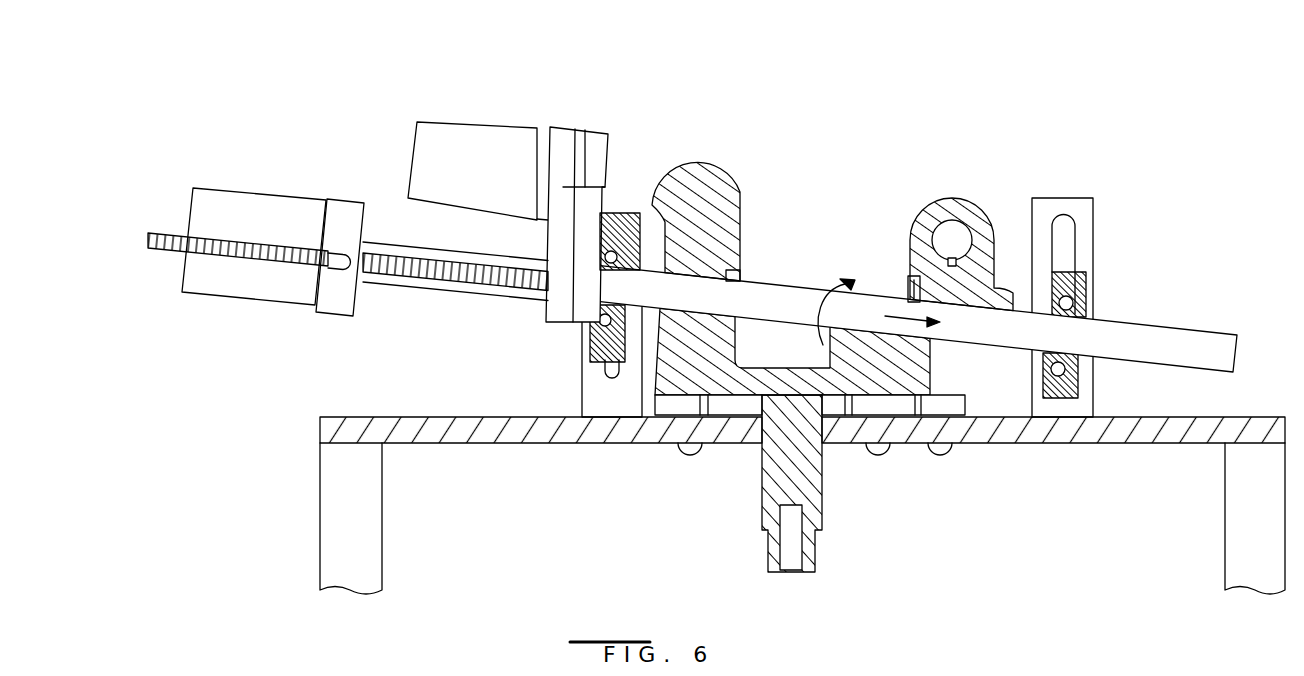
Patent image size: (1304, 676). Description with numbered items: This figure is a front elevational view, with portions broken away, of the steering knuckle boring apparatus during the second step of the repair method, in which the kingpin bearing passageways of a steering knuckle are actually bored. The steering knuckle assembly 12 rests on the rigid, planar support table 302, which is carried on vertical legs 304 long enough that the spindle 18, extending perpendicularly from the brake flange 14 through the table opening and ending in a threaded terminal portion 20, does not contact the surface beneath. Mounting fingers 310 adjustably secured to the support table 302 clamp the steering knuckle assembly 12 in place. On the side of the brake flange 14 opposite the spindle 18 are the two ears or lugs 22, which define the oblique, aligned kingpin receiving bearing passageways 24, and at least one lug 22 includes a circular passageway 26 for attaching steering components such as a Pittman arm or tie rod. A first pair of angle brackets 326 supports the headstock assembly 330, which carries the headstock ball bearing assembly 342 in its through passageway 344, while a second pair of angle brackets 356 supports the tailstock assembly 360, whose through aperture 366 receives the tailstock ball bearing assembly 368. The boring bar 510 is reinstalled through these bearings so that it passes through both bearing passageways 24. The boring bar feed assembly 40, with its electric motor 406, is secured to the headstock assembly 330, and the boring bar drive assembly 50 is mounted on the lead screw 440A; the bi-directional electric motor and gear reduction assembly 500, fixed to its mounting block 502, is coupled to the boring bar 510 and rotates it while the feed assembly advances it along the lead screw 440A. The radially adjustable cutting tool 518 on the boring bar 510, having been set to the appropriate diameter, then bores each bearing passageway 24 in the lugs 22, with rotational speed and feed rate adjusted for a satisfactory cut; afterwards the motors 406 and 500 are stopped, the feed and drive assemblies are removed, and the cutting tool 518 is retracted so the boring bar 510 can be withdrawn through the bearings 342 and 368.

The steering knuckle assembly 12 is at (860, 122).
The brake flange 14 is at (806, 383).
The spindle 18 is at (800, 465).
The threaded terminal portion 20 is at (817, 547).
The ears or lugs 22 is at (697, 172).
The kingpin receiving bearing passageways 24 is at (735, 277).
The circular passageway 26 is at (968, 218).
The boring bar feed assembly 40 is at (550, 95).
The boring bar drive assembly 50 is at (274, 170).
The support table 302 is at (497, 442).
The vertical legs 304 is at (337, 546).
The mounting finger 310 is at (668, 407).
The angle brackets 326 is at (615, 402).
The headstock assembly 330 is at (550, 352).
The headstock ball bearing assembly 342 is at (641, 210).
The through passageway 344 is at (594, 352).
The angle brackets 356 is at (1103, 282).
The tailstock assembly 360 is at (1095, 289).
The through aperture 366 is at (1068, 400).
The tailstock ball bearing assembly 368 is at (1062, 258).
The electric motor 406 is at (452, 110).
The lead screw 440A is at (150, 232).
The bi-directional electric motor and gear reduction assembly 500 is at (190, 330).
The mounting block 502 is at (340, 318).
The boring bar 510 is at (1198, 342).
The cutting tool 518 is at (906, 296).